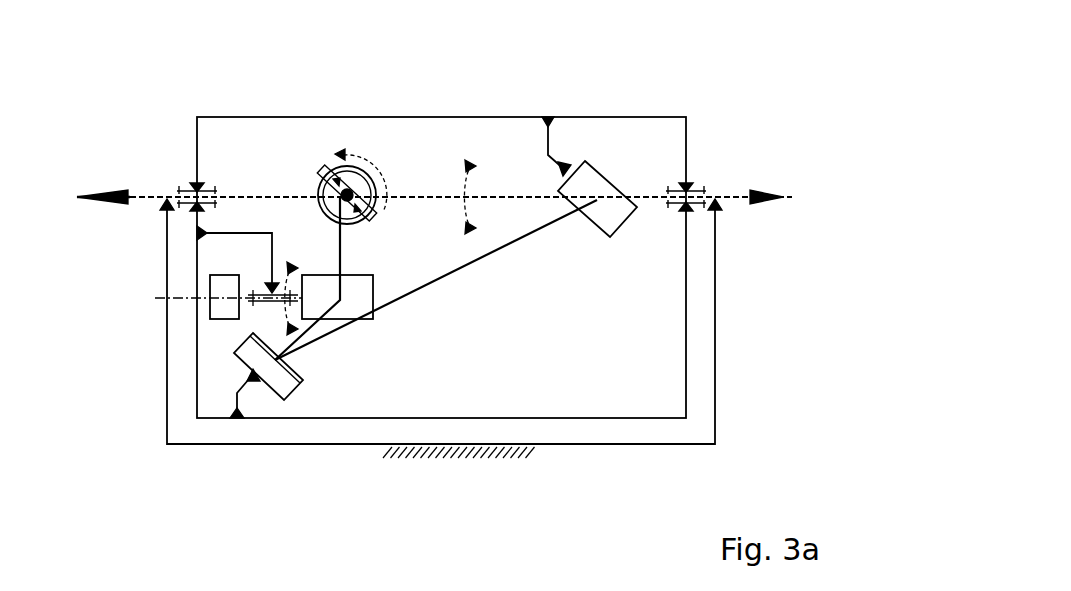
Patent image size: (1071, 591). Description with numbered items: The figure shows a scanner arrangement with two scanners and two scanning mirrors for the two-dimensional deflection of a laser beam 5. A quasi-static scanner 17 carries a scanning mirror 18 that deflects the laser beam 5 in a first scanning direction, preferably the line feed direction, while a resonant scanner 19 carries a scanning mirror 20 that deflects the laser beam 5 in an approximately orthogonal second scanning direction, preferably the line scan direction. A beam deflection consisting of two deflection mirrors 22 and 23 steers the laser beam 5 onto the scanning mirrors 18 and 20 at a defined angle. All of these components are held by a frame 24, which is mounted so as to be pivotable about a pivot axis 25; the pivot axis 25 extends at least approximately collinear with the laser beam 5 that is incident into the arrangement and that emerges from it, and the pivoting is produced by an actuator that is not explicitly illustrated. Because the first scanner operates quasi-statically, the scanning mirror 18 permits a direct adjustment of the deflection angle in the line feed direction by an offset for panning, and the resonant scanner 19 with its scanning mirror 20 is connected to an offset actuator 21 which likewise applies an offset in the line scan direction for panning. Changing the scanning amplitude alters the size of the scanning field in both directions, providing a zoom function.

The laser beam 5 is at (105, 193).
The quasi-static scanner 17 is at (252, 334).
The scanning mirror 18 is at (363, 298).
The resonant scanner 19 is at (347, 166).
The scanning mirror 20 is at (323, 167).
The offset actuator 21 is at (385, 162).
The deflection mirror 22 is at (608, 213).
The deflection mirror 23 is at (272, 365).
The frame 24 is at (648, 418).
The pivot axis 25 is at (492, 197).